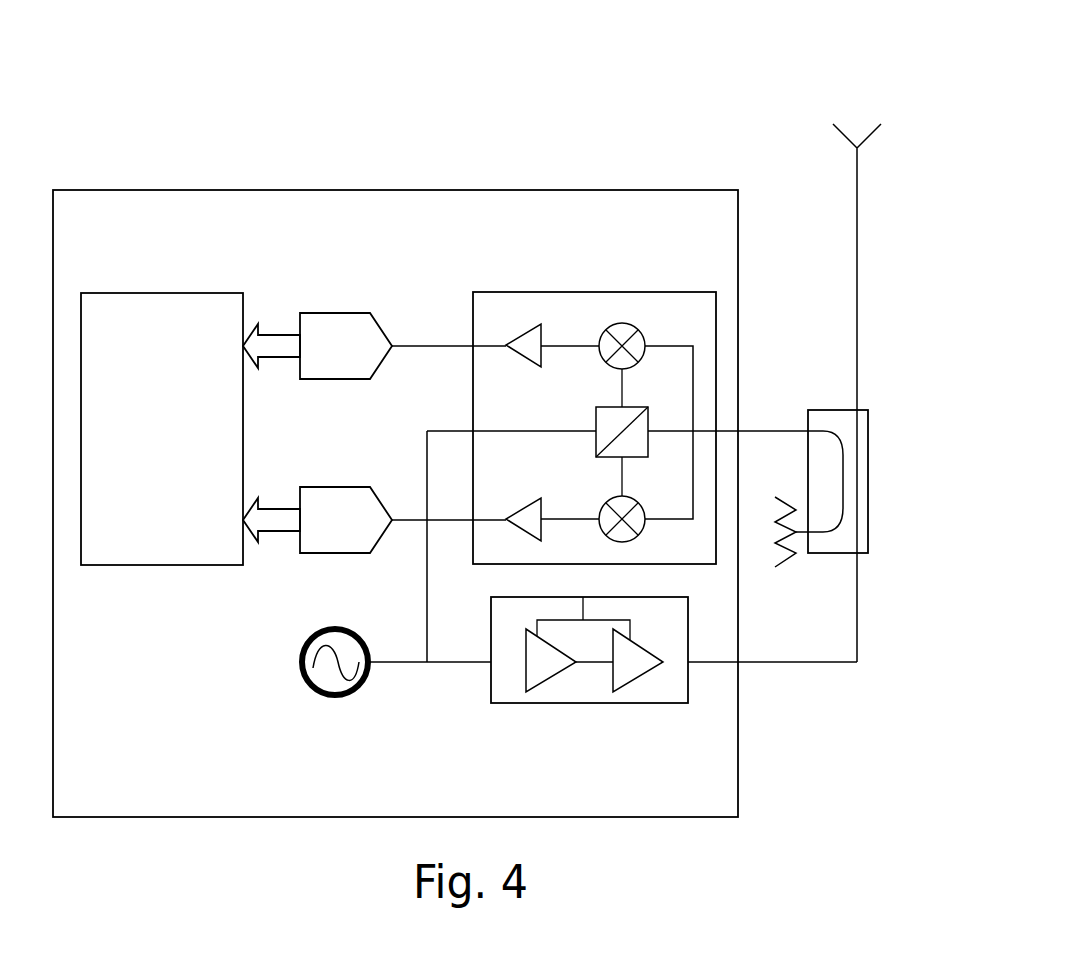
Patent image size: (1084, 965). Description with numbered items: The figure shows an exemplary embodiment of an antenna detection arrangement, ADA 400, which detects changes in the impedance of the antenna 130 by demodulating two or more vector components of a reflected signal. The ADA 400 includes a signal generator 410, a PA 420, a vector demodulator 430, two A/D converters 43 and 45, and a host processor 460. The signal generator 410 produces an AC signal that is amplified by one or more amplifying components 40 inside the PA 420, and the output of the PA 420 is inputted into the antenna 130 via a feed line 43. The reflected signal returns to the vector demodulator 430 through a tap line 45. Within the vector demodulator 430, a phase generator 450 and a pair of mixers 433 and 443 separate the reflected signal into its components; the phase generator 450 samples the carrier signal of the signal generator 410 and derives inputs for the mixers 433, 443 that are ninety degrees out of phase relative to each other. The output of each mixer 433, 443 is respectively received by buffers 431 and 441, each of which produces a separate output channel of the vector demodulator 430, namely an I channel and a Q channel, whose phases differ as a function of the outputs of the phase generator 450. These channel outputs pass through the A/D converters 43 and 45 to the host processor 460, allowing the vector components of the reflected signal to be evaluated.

The antenna detection arrangement 400 is at (437, 188).
The host processor 460 is at (162, 429).
The A/D converter / feed line 43 is at (325, 313).
The A/D converter / tap line 45 is at (333, 556).
The vector demodulator 430 is at (593, 291).
The buffer 431 is at (528, 324).
The mixer 433 is at (607, 327).
The phase generator 450 is at (650, 430).
The buffer 441 is at (522, 535).
The mixer 443 is at (643, 532).
The signal generator 410 is at (318, 694).
The PA 420 is at (589, 741).
The amplifying component 40 is at (594, 660).
The antenna 130 is at (868, 477).